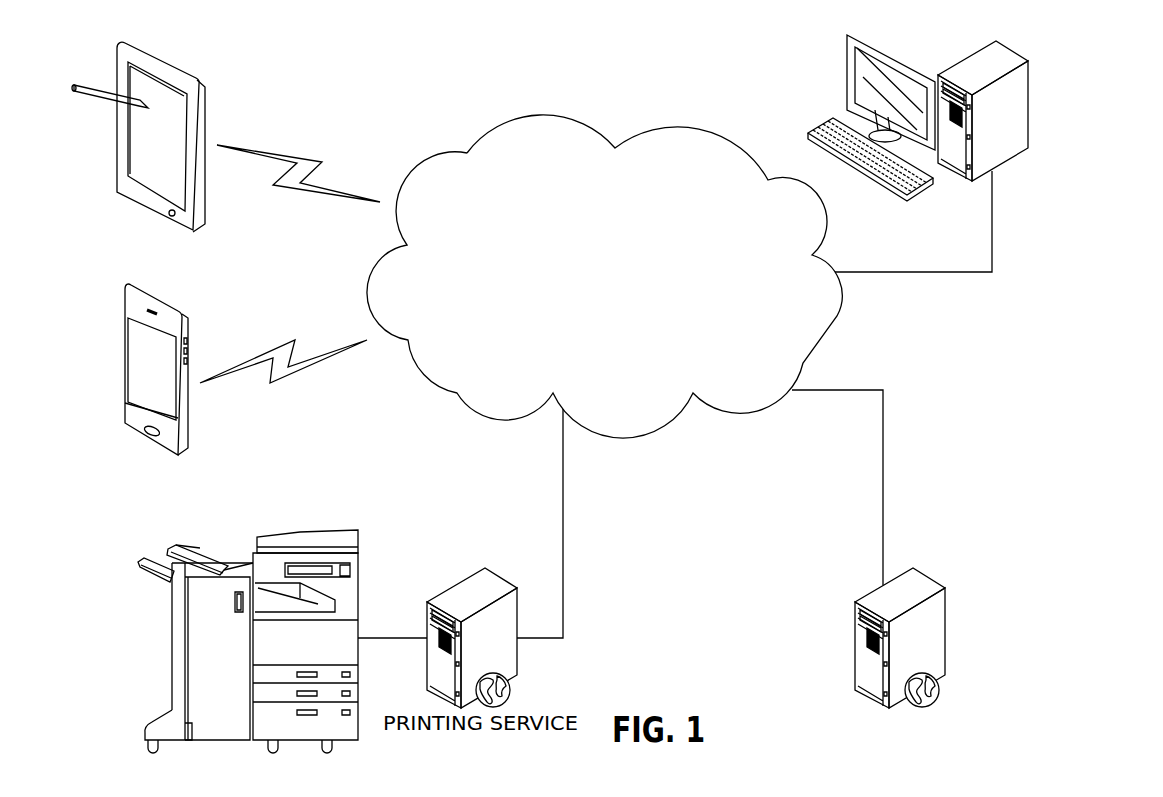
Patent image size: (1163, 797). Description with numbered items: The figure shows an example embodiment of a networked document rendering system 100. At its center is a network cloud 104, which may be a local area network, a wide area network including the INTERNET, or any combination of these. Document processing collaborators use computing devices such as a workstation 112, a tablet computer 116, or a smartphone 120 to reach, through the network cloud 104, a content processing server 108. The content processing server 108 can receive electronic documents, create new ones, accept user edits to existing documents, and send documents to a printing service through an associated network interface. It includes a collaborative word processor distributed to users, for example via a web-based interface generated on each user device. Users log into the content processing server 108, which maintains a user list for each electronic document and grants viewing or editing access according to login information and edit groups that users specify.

The networked document rendering system 100 is at (1061, 65).
The network cloud 104 is at (837, 316).
The content processing server 108 is at (947, 628).
The workstation 112 is at (1017, 160).
The tablet computer 116 is at (207, 122).
The smartphone 120 is at (190, 352).